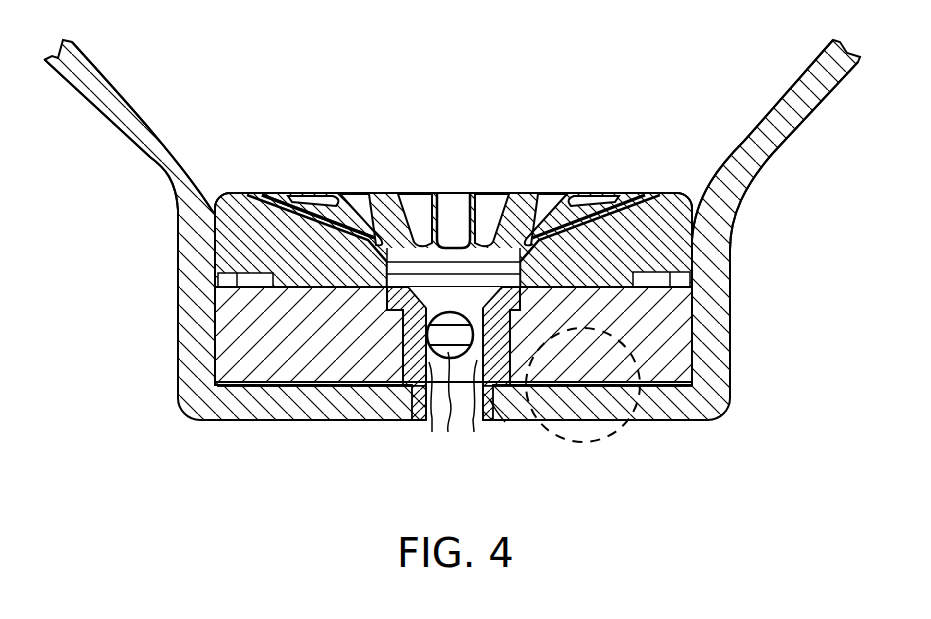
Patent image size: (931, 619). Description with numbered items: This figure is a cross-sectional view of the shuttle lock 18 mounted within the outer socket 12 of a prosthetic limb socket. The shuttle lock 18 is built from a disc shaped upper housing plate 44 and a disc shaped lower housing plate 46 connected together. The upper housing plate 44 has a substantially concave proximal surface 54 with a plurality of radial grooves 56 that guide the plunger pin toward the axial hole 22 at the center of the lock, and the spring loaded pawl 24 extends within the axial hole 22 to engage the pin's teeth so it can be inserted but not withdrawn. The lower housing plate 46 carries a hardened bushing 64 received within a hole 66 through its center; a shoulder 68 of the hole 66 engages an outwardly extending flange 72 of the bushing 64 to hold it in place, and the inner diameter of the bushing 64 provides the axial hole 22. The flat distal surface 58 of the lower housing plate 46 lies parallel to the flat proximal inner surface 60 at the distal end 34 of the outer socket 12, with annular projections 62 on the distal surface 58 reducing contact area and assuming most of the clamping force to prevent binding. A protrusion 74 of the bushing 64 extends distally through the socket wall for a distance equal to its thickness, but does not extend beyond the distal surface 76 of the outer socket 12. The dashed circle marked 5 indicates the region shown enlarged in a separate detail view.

The detail circle for FIG. 5 is at (600, 440).
The outer socket 12 is at (813, 123).
The shuttle lock 18 is at (657, 155).
The axial hole 22 is at (432, 262).
The spring loaded pawl 24 is at (452, 420).
The distal end of the outer socket 34 is at (187, 400).
The upper housing plate 44 is at (230, 230).
The lower housing plate 46 is at (223, 328).
The concave proximal surface 54 is at (490, 197).
The grooves 56 is at (350, 197).
The distal surface of the lower housing plate 58 is at (240, 386).
The proximal inner surface 60 is at (362, 374).
The annular projections 62 is at (300, 386).
The hardened bushing 64 is at (480, 420).
The hole 66 is at (433, 420).
The shoulder 68 is at (392, 318).
The flange 72 is at (397, 295).
The protrusion 74 is at (505, 422).
The distal surface of the outer socket 76 is at (658, 412).